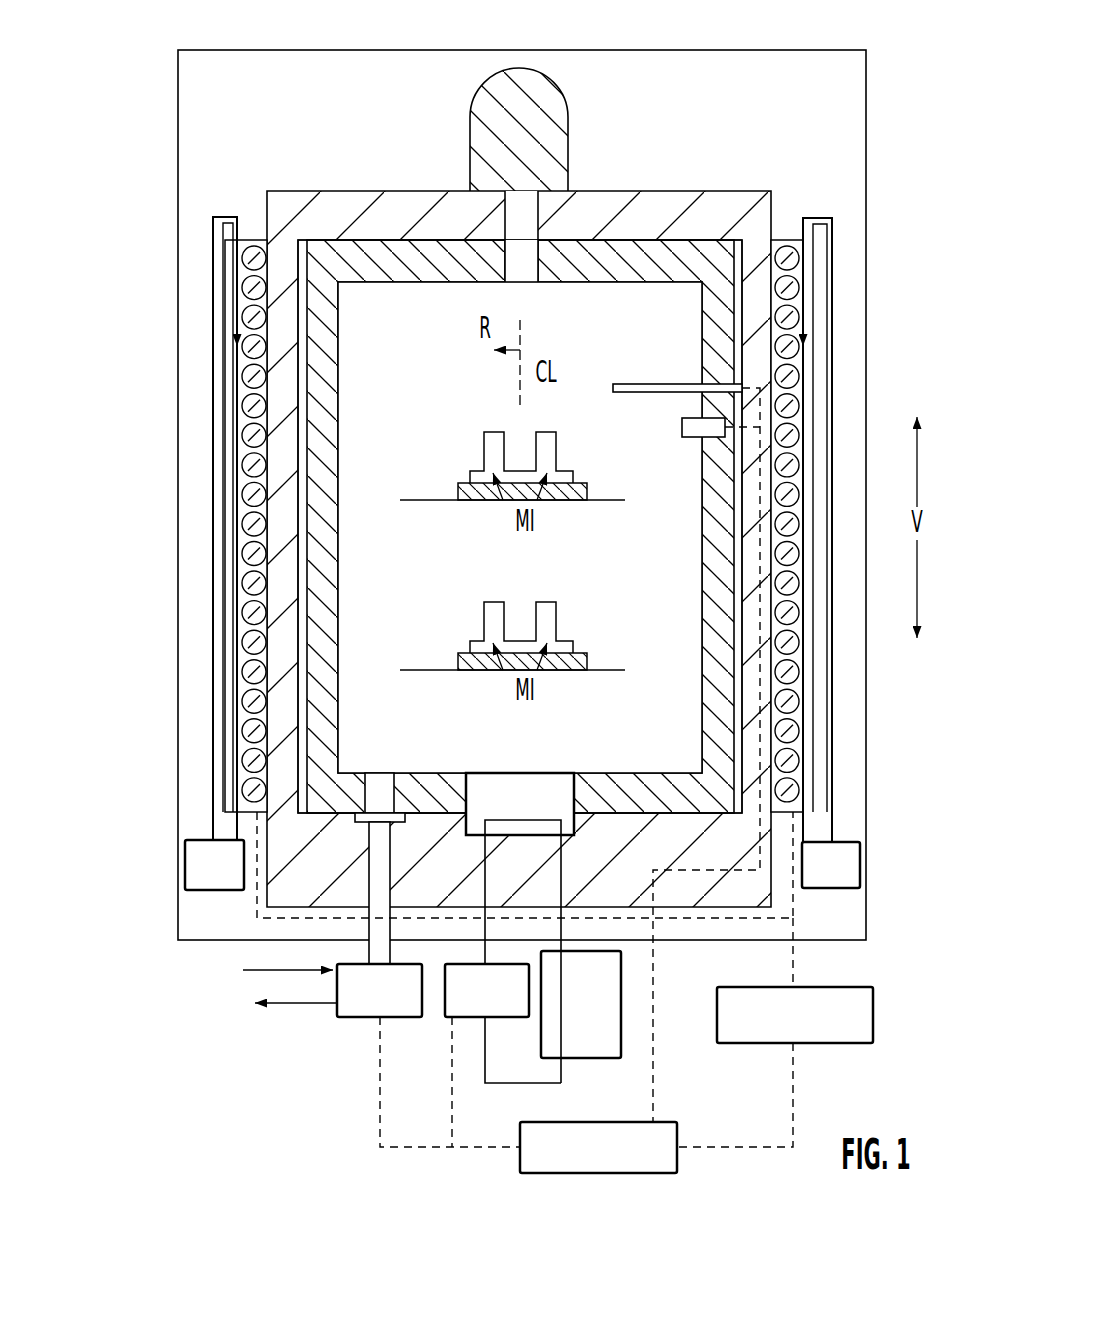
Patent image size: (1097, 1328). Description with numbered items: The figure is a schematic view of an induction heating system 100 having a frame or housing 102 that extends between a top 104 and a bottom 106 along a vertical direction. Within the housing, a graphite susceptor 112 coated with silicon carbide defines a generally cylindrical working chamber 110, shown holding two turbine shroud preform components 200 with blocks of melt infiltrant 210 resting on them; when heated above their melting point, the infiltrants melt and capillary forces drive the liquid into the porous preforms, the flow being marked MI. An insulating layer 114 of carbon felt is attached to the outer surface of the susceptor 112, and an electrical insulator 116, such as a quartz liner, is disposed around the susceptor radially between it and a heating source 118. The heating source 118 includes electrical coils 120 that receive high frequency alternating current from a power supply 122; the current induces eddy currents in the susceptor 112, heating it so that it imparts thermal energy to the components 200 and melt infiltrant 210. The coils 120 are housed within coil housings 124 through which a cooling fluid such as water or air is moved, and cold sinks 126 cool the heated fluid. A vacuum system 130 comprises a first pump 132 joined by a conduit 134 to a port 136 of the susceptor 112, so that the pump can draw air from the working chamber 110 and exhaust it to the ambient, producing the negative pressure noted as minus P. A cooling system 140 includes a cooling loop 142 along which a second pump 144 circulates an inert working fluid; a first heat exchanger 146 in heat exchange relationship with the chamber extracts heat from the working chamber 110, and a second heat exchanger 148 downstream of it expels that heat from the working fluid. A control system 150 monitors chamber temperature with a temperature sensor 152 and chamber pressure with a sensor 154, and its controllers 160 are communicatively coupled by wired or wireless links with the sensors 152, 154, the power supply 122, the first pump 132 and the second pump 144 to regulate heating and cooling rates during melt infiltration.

The induction heating system 100 is at (128, 47).
The housing 102 is at (868, 192).
The top 104 is at (872, 50).
The bottom 106 is at (884, 940).
The working chamber 110 is at (352, 323).
The susceptor 112 is at (646, 247).
The insulating layer 114 is at (298, 560).
The electrical insulator 116 is at (290, 219).
The heating source 118 is at (195, 430).
The electrical coils 120 is at (240, 322).
The power supply 122 is at (779, 1028).
The coil housings 124 is at (794, 238).
The cold sinks 126 is at (198, 880).
The vacuum system 130 is at (243, 1035).
The first pump 132 is at (364, 1005).
The conduit 134 is at (368, 876).
The port 136 is at (398, 784).
The cooling system 140 is at (527, 928).
The cooling loop 142 is at (483, 893).
The pump 144 is at (471, 1005).
The first heat exchanger 146 is at (504, 812).
The second heat exchanger 148 is at (565, 1005).
The control system 150 is at (565, 800).
The temperature sensor 152 is at (647, 383).
The sensor 154 is at (694, 438).
The controllers 160 is at (582, 1161).
The components 200 is at (484, 447).
The melt infiltrant 210 is at (572, 501).